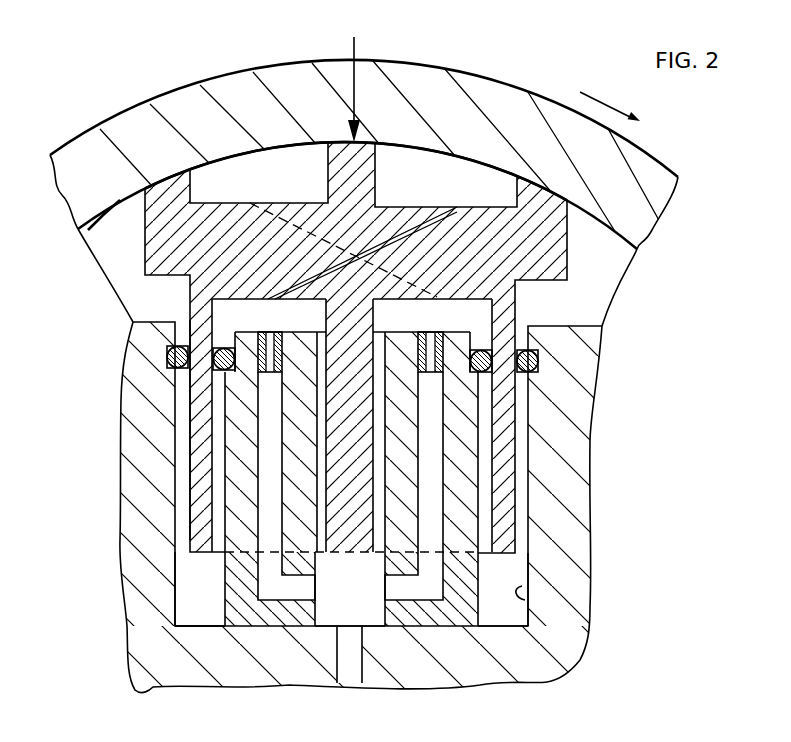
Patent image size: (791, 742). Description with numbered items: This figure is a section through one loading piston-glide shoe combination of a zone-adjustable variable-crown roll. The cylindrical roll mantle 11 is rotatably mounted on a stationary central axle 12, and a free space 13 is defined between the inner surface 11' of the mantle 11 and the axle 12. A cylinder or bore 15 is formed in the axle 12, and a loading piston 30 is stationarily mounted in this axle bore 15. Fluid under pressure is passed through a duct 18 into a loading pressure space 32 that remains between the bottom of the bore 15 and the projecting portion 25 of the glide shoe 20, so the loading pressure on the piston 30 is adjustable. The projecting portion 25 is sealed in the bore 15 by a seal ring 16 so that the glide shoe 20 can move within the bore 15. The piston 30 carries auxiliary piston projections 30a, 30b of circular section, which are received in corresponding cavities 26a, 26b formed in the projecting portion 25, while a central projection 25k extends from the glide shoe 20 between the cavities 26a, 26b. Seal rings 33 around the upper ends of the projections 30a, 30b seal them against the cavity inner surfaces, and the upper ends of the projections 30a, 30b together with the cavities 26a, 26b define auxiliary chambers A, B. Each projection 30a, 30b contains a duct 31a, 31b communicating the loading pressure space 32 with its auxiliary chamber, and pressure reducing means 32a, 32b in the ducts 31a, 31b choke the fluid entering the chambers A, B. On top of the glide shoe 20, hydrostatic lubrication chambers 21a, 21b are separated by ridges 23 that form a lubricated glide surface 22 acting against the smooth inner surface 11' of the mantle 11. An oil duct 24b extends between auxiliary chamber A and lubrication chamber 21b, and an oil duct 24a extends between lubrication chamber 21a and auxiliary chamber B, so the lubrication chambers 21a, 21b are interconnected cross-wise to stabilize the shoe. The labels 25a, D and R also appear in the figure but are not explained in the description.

The roll mantle 11 is at (375, 177).
The inner surface of the roll mantle 11' is at (89, 250).
The central axle 12 is at (140, 628).
The free space 13 is at (618, 260).
The cylinder bore 15 is at (525, 600).
The seal ring 16 is at (163, 357).
The duct 18 is at (350, 673).
The glide shoe 20 is at (575, 280).
The hydrostatic lubrication chamber 21a is at (228, 177).
The hydrostatic lubrication chamber 21b is at (400, 157).
The glide surface 22 is at (163, 176).
The ridges 23 is at (270, 138).
The oil duct 24a is at (288, 208).
The oil duct 24b is at (413, 227).
The projecting portion 25 is at (195, 470).
The side wall of insert body 25a is at (182, 502).
The central projection 25k is at (351, 560).
The cavity 26a is at (217, 447).
The cavity 26b is at (487, 487).
The loading piston 30 is at (467, 612).
The auxiliary piston projection 30a is at (234, 578).
The auxiliary piston projection 30b is at (483, 568).
The duct 31a is at (267, 410).
The duct 31b is at (432, 413).
The loading pressure space 32 is at (328, 620).
The pressure reducing means 32a is at (270, 338).
The pressure reducing means 32b is at (432, 338).
The seal ring 33 is at (220, 353).
The auxiliary chamber A is at (218, 313).
The auxiliary chamber B is at (482, 315).
The direction D is at (353, 45).
The direction of rotation R is at (600, 97).